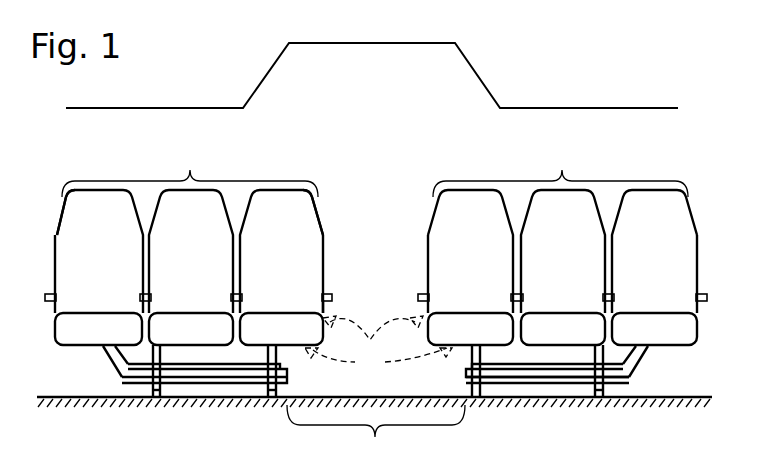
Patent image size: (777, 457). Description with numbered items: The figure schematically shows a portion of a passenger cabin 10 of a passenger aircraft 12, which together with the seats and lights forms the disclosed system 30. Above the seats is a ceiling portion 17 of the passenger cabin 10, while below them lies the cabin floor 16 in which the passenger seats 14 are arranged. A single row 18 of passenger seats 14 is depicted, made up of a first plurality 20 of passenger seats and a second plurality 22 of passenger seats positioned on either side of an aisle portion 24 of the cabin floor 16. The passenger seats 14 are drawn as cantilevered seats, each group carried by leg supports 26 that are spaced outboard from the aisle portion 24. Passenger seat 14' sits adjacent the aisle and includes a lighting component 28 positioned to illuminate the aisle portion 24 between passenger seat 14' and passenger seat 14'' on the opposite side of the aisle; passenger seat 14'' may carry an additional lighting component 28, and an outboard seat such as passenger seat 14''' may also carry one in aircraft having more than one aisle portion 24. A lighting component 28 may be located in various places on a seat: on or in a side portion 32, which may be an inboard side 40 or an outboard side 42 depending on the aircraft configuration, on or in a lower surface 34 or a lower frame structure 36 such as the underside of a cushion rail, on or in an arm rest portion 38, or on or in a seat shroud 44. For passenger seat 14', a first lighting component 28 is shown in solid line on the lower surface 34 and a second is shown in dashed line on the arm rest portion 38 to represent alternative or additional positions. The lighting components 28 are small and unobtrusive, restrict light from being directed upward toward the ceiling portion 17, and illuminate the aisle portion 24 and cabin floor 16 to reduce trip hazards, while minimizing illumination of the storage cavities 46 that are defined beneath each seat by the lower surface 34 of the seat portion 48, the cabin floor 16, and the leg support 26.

The passenger cabin 10 is at (548, 100).
The passenger aircraft 12 is at (594, 81).
The system 30 is at (638, 58).
The ceiling portion 17 is at (371, 45).
The first plurality of passenger seats 20 is at (198, 244).
The second plurality of passenger seats 22 is at (571, 244).
The passenger seat 14 is at (133, 267).
The passenger seat 14' is at (458, 267).
The passenger seat 14'' is at (306, 266).
The passenger seat 14''' is at (680, 266).
The outboard side 42 is at (63, 214).
The inboard side 40 is at (324, 221).
The side portion 32 is at (55, 273).
The arm rest portion 38 is at (328, 296).
The seat shroud 44 is at (331, 307).
The seat portion 48 is at (552, 312).
The row 18 is at (704, 283).
The lighting component 28 is at (378, 346).
The lower surface 34 is at (460, 357).
The lower frame structure 36 is at (375, 380).
The leg support 26 is at (587, 375).
The storage cavity 46 is at (84, 374).
The cabin floor 16 is at (663, 393).
The aisle portion 24 is at (376, 431).